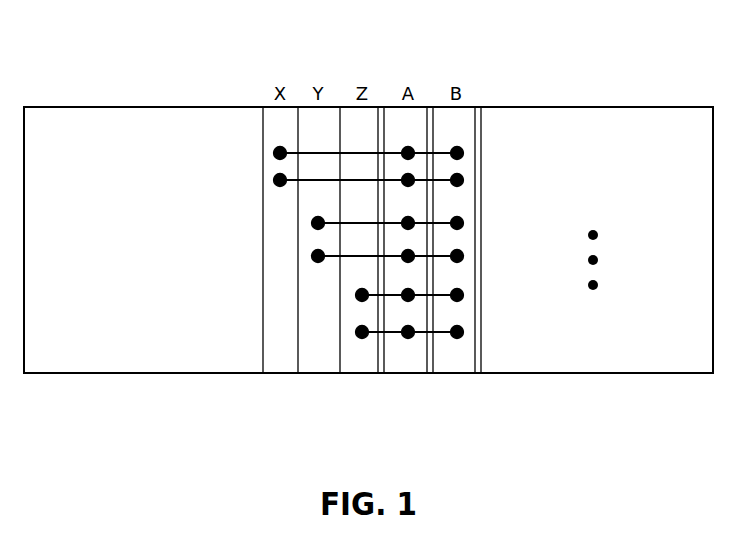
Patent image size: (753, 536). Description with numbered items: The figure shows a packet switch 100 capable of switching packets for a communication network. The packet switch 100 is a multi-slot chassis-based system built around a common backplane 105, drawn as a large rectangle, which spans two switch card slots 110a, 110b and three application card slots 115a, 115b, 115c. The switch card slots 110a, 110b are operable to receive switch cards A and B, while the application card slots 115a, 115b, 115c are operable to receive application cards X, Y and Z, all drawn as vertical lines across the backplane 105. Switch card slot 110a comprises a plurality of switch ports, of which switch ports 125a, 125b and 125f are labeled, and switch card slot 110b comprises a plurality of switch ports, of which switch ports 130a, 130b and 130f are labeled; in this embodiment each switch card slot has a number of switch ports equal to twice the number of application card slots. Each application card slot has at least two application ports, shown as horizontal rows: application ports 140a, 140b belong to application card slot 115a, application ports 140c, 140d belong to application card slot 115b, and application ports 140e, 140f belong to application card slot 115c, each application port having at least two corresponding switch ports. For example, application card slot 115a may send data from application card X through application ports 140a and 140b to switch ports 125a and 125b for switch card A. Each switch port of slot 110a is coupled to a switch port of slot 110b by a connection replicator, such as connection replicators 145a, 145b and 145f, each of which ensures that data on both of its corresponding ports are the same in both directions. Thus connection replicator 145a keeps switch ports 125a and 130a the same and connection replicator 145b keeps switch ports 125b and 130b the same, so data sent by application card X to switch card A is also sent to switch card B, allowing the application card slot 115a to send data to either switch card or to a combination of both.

The packet switch 100 is at (108, 68).
The common backplane 105 is at (598, 374).
The switch card slot 110a is at (403, 374).
The switch card slot 110b is at (458, 374).
The application card slot 115a is at (278, 374).
The application card slot 115b is at (318, 374).
The application card slot 115c is at (355, 374).
The switch port 125a is at (410, 148).
The switch port 125b is at (410, 185).
The switch port 125f is at (410, 326).
The switch port 130a is at (464, 153).
The switch port 130b is at (464, 180).
The switch port 130f is at (464, 332).
The application port 140a is at (273, 153).
The application port 140b is at (273, 180).
The application port 140c is at (311, 223).
The application port 140d is at (311, 256).
The application port 140e is at (356, 295).
The application port 140f is at (356, 332).
The connection replicator 145a is at (365, 151).
The connection replicator 145b is at (326, 183).
The connection replicator 145f is at (440, 335).